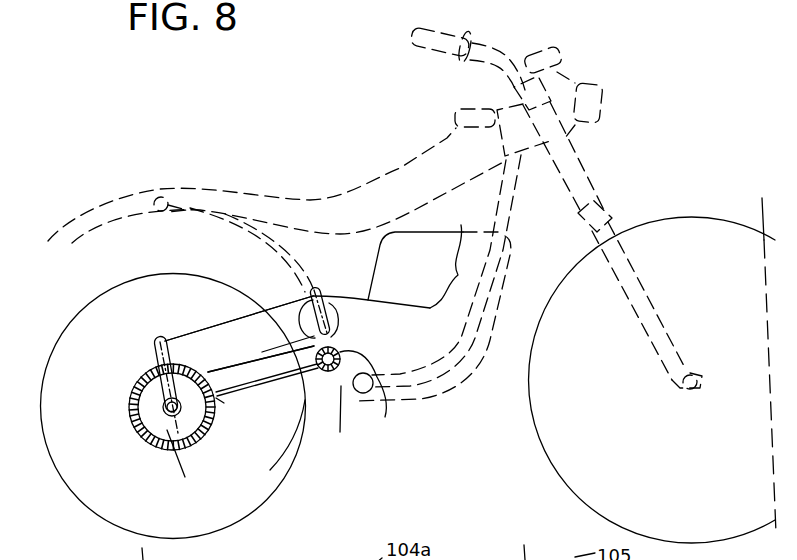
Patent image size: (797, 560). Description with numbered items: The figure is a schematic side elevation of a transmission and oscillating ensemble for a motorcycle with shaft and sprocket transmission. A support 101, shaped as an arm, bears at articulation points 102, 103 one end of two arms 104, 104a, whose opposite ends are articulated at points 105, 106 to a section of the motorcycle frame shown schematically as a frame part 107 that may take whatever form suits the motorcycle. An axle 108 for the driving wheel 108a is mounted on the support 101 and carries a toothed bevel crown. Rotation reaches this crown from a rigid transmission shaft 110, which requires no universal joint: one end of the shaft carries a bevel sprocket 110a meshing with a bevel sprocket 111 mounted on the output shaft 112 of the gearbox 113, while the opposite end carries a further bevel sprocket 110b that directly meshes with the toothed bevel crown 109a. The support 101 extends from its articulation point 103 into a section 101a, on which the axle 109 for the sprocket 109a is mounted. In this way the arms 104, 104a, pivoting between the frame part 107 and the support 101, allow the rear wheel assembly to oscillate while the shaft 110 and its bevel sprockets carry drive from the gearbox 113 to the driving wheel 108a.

The support 101 is at (152, 356).
The section of the support 101a is at (133, 420).
The articulation point 102 is at (160, 340).
The articulation point 103 is at (125, 382).
The arm 104 is at (197, 330).
The arm 104a is at (240, 357).
The articulation point of the frame 105 is at (313, 290).
The articulation point of the frame 106 is at (332, 314).
The frame part 107 is at (309, 333).
The axle 108 is at (147, 442).
The driving wheel 108a is at (270, 468).
The axle 109 is at (133, 432).
The toothed bevel crown 109a is at (168, 440).
The rigid transmission shaft 110 is at (242, 385).
The bevel sprocket 110a is at (385, 417).
The bevel sprocket 110b is at (216, 400).
The bevel sprocket 111 is at (307, 380).
The output shaft 112 is at (340, 342).
The gearbox 113 is at (345, 388).